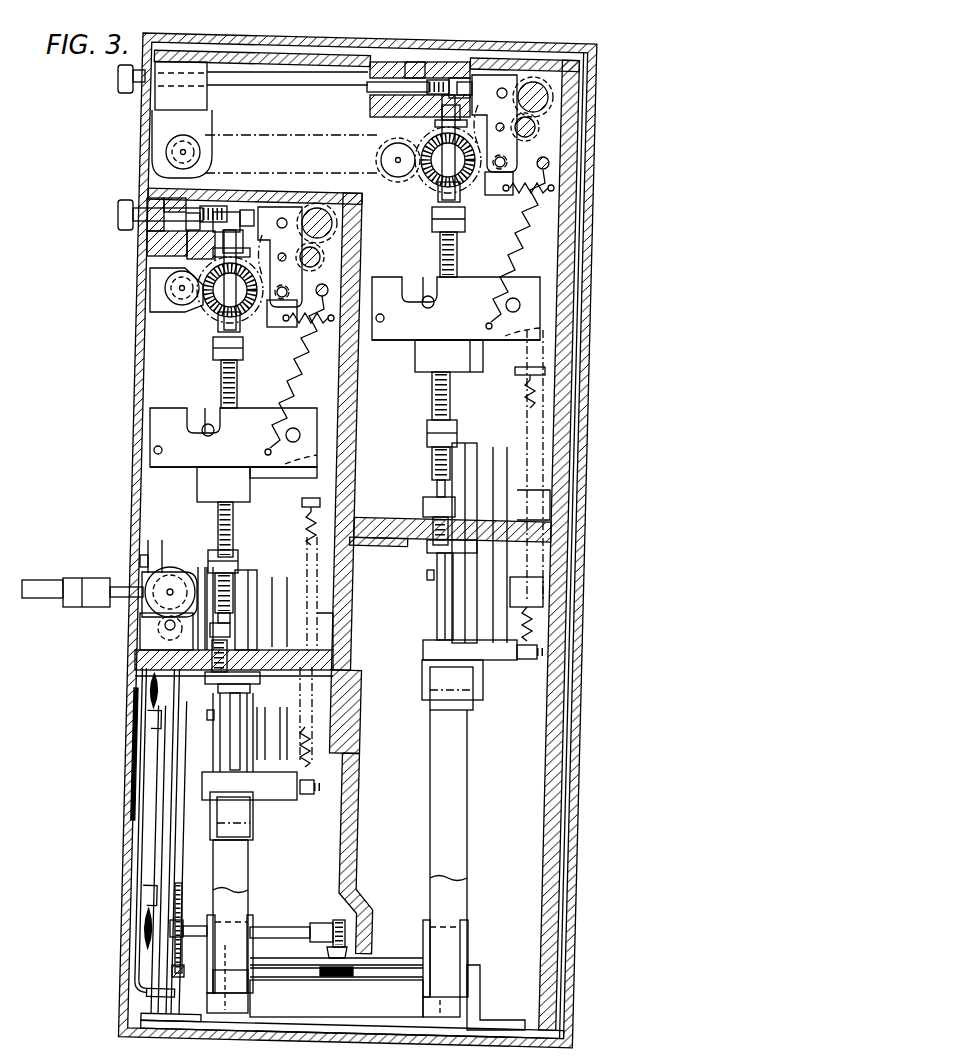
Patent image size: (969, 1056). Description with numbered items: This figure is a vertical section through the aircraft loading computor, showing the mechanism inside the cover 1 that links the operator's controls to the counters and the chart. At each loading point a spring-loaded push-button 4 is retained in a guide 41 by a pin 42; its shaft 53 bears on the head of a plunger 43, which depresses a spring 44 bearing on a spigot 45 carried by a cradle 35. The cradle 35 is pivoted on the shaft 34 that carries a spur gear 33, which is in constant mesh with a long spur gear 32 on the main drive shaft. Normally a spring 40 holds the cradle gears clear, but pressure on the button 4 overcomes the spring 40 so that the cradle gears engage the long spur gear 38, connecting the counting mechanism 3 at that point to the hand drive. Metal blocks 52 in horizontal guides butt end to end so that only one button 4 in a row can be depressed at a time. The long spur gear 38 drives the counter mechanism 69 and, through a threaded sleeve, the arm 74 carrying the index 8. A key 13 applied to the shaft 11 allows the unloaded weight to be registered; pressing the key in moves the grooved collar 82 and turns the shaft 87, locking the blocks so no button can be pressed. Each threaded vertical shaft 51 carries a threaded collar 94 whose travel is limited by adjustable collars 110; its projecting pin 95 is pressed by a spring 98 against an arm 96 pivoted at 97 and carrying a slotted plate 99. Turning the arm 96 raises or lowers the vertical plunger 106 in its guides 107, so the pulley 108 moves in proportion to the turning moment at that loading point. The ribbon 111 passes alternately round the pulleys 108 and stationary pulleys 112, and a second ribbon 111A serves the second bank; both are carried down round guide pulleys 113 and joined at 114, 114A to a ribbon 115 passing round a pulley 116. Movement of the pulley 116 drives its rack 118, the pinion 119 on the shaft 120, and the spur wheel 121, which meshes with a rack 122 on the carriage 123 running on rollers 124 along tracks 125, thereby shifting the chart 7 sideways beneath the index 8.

The cover 1 is at (135, 438).
The counting mechanism 3 is at (165, 147).
The push-button 4 is at (123, 81).
The chart 7 is at (143, 760).
The index 8 is at (125, 813).
The shaft 11 is at (127, 598).
The key 13 is at (45, 580).
The long spur gear 32 is at (322, 262).
The spur gear 33 is at (322, 253).
The shaft 34 is at (393, 220).
The cradle 35 is at (272, 208).
The spur gear 38 is at (340, 224).
The spring 40 is at (300, 325).
The guide 41 is at (155, 233).
The pin 42 is at (152, 200).
The plunger 43 is at (224, 212).
The spring 44 is at (244, 208).
The spigot 45 is at (260, 212).
The vertical shaft 51 is at (234, 373).
The metal block 52 is at (157, 244).
The shaft 53 is at (245, 84).
The counter mechanism 69 is at (176, 570).
The arm 74 is at (138, 582).
The grooved collar 82 is at (156, 555).
The shaft 87 is at (135, 645).
The threaded collar 94 is at (430, 360).
The projecting pin 95 is at (207, 423).
The arm 96 is at (233, 443).
The pivot 97 is at (297, 432).
The spring 98 is at (308, 383).
The plate 99 is at (170, 415).
The vertical plunger 106 is at (243, 528).
The guides 107 is at (240, 588).
The pulley 108 is at (258, 822).
The adjustable collar 110 is at (213, 350).
The ribbon 111 is at (235, 868).
The second ribbon 111A is at (448, 780).
The stationary pulley 112 is at (340, 745).
The guide pulley 113 is at (250, 922).
The connection 114 is at (240, 1005).
The connection 114A is at (455, 1010).
The ribbon 115 is at (220, 970).
The pulley 116 is at (362, 997).
The rack 118 is at (348, 950).
The pinion 119 is at (347, 930).
The shaft 120 is at (258, 940).
The spur wheel 121 is at (182, 895).
The rack 122 is at (132, 992).
The carriage 123 is at (135, 963).
The roller 124 is at (152, 690).
The track 125 is at (160, 723).